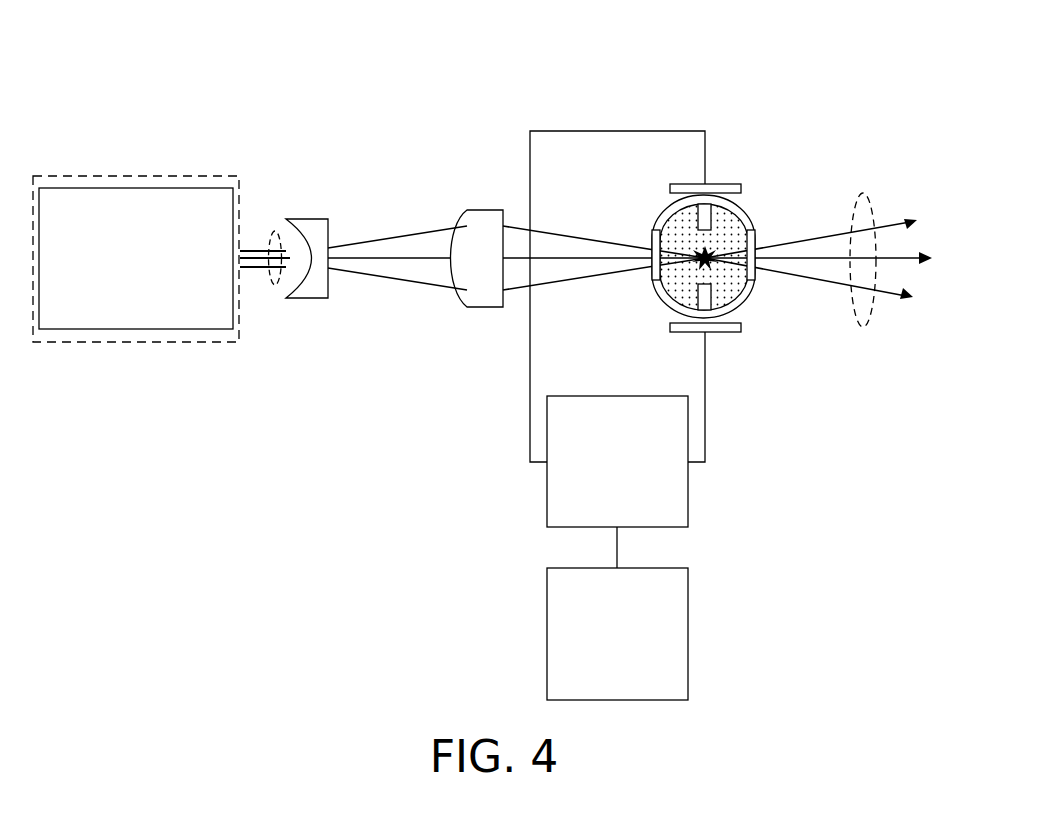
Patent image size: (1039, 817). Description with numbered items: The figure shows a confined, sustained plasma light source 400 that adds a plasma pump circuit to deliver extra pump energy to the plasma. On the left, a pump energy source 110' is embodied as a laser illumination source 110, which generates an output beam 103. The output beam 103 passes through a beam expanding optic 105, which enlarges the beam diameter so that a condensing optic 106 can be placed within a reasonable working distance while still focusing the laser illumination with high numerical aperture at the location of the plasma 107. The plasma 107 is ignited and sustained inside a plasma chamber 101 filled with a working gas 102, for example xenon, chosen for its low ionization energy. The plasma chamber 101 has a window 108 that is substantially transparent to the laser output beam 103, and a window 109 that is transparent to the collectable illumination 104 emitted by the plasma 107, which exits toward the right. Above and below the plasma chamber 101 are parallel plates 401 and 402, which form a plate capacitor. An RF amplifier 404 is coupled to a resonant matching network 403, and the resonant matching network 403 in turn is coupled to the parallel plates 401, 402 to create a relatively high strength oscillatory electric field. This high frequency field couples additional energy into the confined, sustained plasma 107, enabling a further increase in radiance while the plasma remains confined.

The CSP light source 400 is at (123, 104).
The laser illumination source 110 is at (136, 258).
The pump energy source 110' is at (136, 284).
The output beam 103 is at (275, 231).
The beam expanding optic 105 is at (306, 300).
The condensing optic 106 is at (470, 309).
The plasma chamber 101 is at (668, 212).
The working gas 102 is at (673, 233).
The window 108 is at (653, 244).
The window 109 is at (758, 240).
The plasma 107 is at (708, 254).
The parallel plate 401 is at (735, 183).
The parallel plate 402 is at (670, 328).
The collectable illumination 104 is at (862, 193).
The resonant matching network 403 is at (617, 461).
The RF amplifier 404 is at (617, 634).